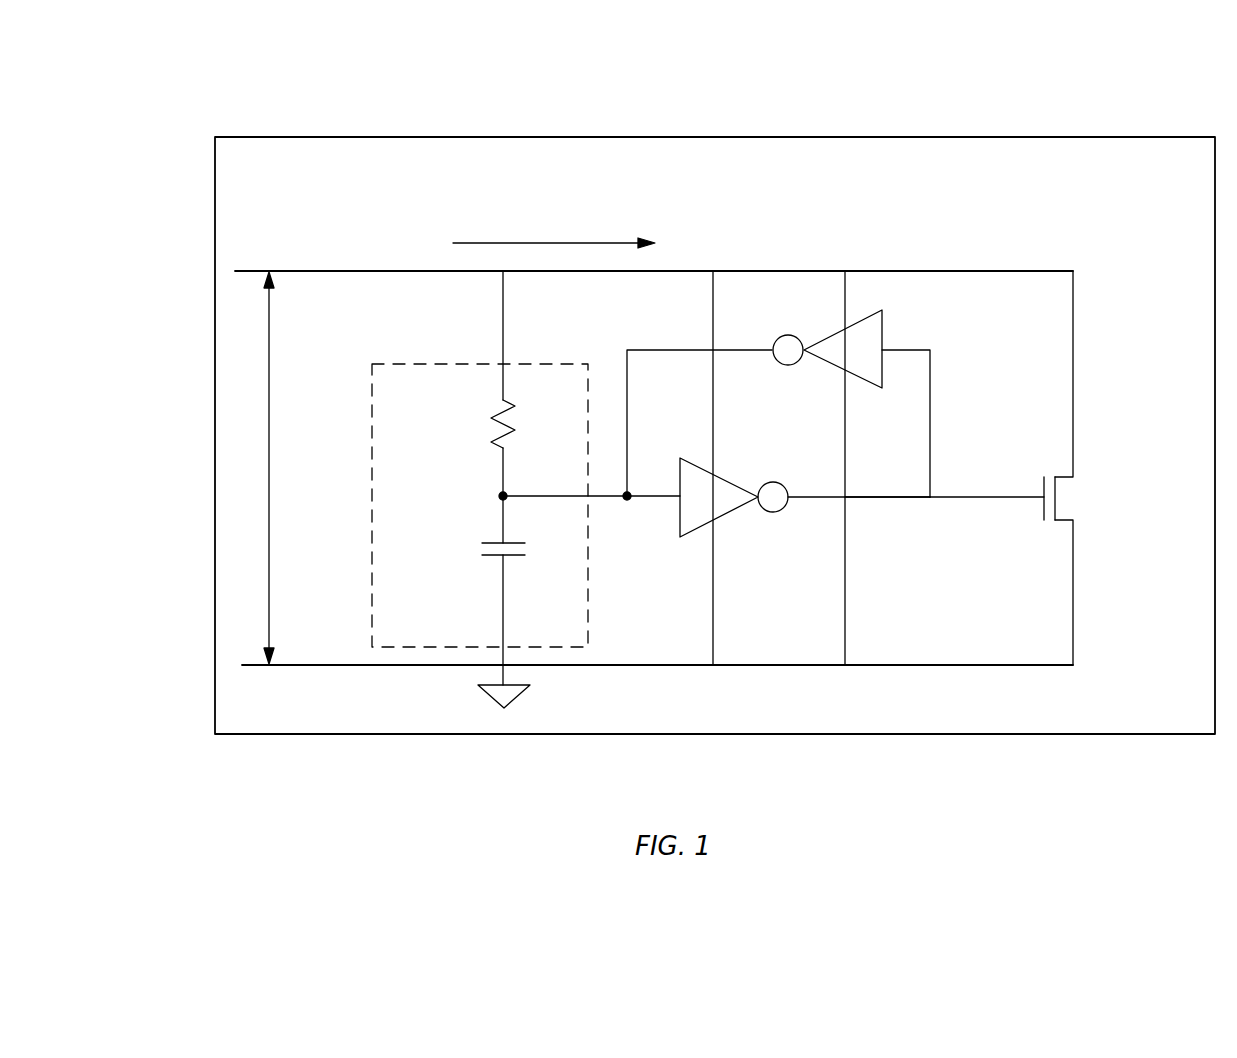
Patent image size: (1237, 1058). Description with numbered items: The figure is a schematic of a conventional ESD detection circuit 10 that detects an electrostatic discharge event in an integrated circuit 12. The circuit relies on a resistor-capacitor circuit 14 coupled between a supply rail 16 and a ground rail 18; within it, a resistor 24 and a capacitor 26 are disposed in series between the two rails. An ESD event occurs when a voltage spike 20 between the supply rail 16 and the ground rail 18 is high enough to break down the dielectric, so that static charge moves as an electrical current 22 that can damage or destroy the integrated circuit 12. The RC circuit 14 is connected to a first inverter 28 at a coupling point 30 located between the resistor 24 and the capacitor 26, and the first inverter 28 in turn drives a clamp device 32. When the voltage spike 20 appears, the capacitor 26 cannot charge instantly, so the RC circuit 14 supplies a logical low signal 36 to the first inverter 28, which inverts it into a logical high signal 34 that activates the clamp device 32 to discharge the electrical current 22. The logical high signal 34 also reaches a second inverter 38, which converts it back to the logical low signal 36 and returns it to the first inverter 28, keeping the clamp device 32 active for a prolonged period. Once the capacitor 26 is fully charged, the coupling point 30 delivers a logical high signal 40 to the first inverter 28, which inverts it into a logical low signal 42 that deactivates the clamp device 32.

The ESD detection circuit 10 is at (1138, 137).
The integrated circuit 12 is at (165, 124).
The resistor-capacitor circuit 14 is at (372, 482).
The supply rail 16 is at (310, 271).
The ground rail 18 is at (335, 666).
The voltage spike 20 is at (270, 362).
The electrical current 22 is at (535, 229).
The resistor 24 is at (497, 415).
The capacitor 26 is at (488, 541).
The first inverter 28 is at (727, 515).
The coupling point 30 is at (511, 478).
The clamp device 32 is at (1073, 497).
The logical high signal 34 is at (904, 346).
The logical low signal 36 is at (540, 504).
The second inverter 38 is at (830, 368).
The logical high signal 40 is at (608, 504).
The logical low signal 42 is at (882, 504).